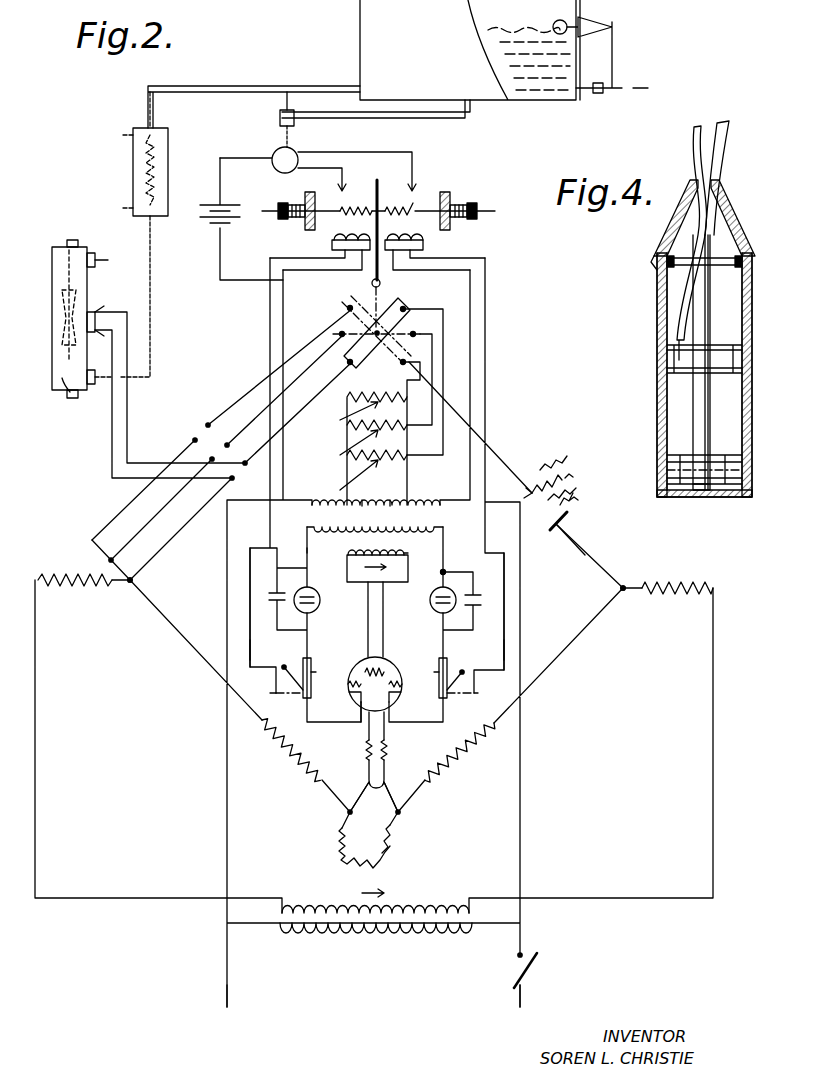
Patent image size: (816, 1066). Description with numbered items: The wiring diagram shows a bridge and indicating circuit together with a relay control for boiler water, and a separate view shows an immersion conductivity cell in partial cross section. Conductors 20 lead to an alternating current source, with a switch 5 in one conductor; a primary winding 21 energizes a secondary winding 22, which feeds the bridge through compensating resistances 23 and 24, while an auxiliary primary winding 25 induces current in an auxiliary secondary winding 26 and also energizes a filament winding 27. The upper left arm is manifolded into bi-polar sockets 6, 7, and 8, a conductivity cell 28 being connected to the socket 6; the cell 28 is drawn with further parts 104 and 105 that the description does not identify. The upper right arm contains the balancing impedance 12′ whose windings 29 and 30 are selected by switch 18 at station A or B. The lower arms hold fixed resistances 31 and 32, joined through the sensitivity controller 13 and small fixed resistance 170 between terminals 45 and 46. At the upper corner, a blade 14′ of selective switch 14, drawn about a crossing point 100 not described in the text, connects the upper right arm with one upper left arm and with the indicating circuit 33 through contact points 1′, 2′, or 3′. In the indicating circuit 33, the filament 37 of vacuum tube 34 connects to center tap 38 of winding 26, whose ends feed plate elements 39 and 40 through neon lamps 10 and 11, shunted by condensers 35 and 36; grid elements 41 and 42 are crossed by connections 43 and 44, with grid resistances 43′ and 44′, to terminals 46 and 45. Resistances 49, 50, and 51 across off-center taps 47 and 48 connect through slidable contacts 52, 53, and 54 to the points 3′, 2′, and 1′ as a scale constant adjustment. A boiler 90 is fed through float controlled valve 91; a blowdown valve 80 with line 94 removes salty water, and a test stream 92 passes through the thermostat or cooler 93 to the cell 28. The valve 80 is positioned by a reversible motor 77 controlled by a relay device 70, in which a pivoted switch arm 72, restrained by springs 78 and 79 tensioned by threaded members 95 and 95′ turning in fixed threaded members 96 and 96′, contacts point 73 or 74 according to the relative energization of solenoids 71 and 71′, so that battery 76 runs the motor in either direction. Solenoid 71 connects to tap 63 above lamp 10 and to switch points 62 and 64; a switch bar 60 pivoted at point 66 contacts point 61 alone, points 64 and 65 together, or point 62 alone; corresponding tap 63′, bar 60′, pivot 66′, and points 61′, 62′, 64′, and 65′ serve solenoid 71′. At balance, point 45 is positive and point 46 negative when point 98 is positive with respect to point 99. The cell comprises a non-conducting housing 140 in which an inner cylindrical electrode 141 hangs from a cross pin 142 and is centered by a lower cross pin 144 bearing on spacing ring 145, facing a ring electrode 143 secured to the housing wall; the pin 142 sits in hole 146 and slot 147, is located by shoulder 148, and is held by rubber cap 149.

In FIG. 2, the boiler 90 is at (360, 37).
In FIG. 2, the float controlled valve 91 is at (598, 94).
In FIG. 2, the test stream 92 is at (292, 85).
In FIG. 2, the blowdown valve 80 is at (278, 100).
In FIG. 2, the line 94 is at (450, 118).
In FIG. 2, the reversible motor 77 is at (272, 157).
In FIG. 2, the contact point 73 is at (352, 182).
In FIG. 2, the contact point 74 is at (400, 182).
In FIG. 2, the pivoted switch arm 72 is at (389, 227).
In FIG. 2, the relay device 70 is at (433, 204).
In FIG. 2, the spring 78 is at (356, 218).
In FIG. 2, the spring 79 is at (405, 218).
In FIG. 2, the fixed threaded member 96 is at (305, 205).
In FIG. 2, the fixed threaded member 96′ is at (452, 205).
In FIG. 2, the threaded member 95 is at (280, 216).
In FIG. 2, the threaded member 95′ is at (490, 212).
In FIG. 2, the solenoid 71 is at (332, 243).
In FIG. 2, the solenoid 71′ is at (423, 243).
In FIG. 2, the battery 76 is at (215, 224).
In FIG. 2, the thermostat or cooler 93 is at (133, 158).
In FIG. 2, the conductivity cell 28 is at (52, 262).
In FIG. 2, the thermostat element 105 is at (62, 330).
In FIG. 2, the thermostat terminal 104 is at (62, 378).
In FIG. 2, the bi-polar socket 8 is at (204, 430).
In FIG. 2, the bi-polar socket 7 is at (220, 458).
In FIG. 2, the bi-polar socket 6 is at (238, 475).
In FIG. 2, the compensating resistance 23 is at (74, 578).
In FIG. 2, the point 98 is at (128, 584).
In FIG. 2, the compensating resistance 24 is at (673, 586).
In FIG. 2, the point 99 is at (624, 592).
In FIG. 2, the selective switch 14 is at (402, 303).
In FIG. 2, the blade 14′ is at (380, 318).
In FIG. 2, the pivot 100 is at (377, 340).
In FIG. 2, the contact point 1′ is at (408, 309).
In FIG. 2, the contact point 2′ is at (416, 334).
In FIG. 2, the contact point 3′ is at (407, 362).
In FIG. 2, the resistance 49 is at (347, 401).
In FIG. 2, the resistance 50 is at (347, 430).
In FIG. 2, the resistance 51 is at (347, 462).
In FIG. 2, the slidable contact 52 is at (345, 415).
In FIG. 2, the slidable contact 53 is at (345, 447).
In FIG. 2, the slidable contact 54 is at (345, 480).
In FIG. 2, the off-center tap 47 is at (362, 502).
In FIG. 2, the off-center tap 48 is at (390, 500).
In FIG. 2, the auxiliary primary winding 25 is at (412, 503).
In FIG. 2, the auxiliary secondary winding 26 is at (443, 528).
In FIG. 2, the indicating circuit 33 is at (420, 480).
In FIG. 2, the center tap 38 is at (350, 554).
In FIG. 2, the tap 63 is at (350, 556).
In FIG. 2, the tap 63′ is at (405, 554).
In FIG. 2, the filament winding 27 is at (440, 572).
In FIG. 2, the neon lamp 10 is at (320, 600).
In FIG. 2, the neon lamp 11 is at (430, 600).
In FIG. 2, the condenser 35 is at (250, 590).
In FIG. 2, the condenser 36 is at (480, 595).
In FIG. 2, the switch point 64 is at (250, 655).
In FIG. 2, the switch point 64′ is at (504, 655).
In FIG. 2, the switch point 61 is at (311, 660).
In FIG. 2, the switch point 61′ is at (441, 660).
In FIG. 2, the switch bar 60 is at (312, 672).
In FIG. 2, the switch bar 60′ is at (439, 672).
In FIG. 2, the switch point 65 is at (282, 664).
In FIG. 2, the switch point 65′ is at (463, 668).
In FIG. 2, the pivot point 66 is at (300, 695).
In FIG. 2, the pivot point 66′ is at (450, 696).
In FIG. 2, the switch point 62 is at (272, 693).
In FIG. 2, the switch point 62′ is at (476, 693).
In FIG. 2, the filament 37 is at (363, 670).
In FIG. 2, the grid element 41 is at (350, 686).
In FIG. 2, the grid element 42 is at (400, 690).
In FIG. 2, the plate element 39 is at (350, 696).
In FIG. 2, the plate element 40 is at (393, 703).
In FIG. 2, the vacuum tube 34 is at (358, 714).
In FIG. 2, the grid resistance 43′ is at (366, 756).
In FIG. 2, the grid resistance 44′ is at (388, 758).
In FIG. 2, the fixed resistance 31 is at (290, 752).
In FIG. 2, the fixed resistance 32 is at (455, 758).
In FIG. 2, the connection 43 is at (348, 807).
In FIG. 2, the connection 44 is at (400, 807).
In FIG. 2, the terminal 45 is at (345, 815).
In FIG. 2, the terminal 46 is at (403, 815).
In FIG. 2, the sensitivity controller 13 is at (338, 868).
In FIG. 2, the small fixed resistance 170 is at (402, 838).
In FIG. 2, the secondary winding 22 is at (435, 902).
In FIG. 2, the primary winding 21 is at (352, 945).
In FIG. 2, the conductor 20 is at (227, 988).
In FIG. 2, the switch 5 is at (538, 962).
In FIG. 2, the balancing impedance 12′ is at (563, 451).
In FIG. 2, the winding 29 is at (575, 478).
In FIG. 2, the winding 30 is at (578, 501).
In FIG. 2, the station A is at (558, 506).
In FIG. 2, the station B is at (570, 520).
In FIG. 2, the selective switch 18 is at (554, 528).
In FIG. 4, the housing 140 is at (657, 350).
In FIG. 4, the cross pin 142 is at (750, 250).
In FIG. 4, the slot 147 is at (750, 262).
In FIG. 4, the inner cylindrical electrode 141 is at (684, 421).
In FIG. 4, the second electrode 143 is at (740, 347).
In FIG. 4, the spacing ring 145 is at (745, 478).
In FIG. 4, the lower cross pin 144 is at (722, 470).
In FIG. 4, the shoulder 148 is at (664, 298).
In FIG. 4, the rubber cap 149 is at (710, 240).
In FIG. 4, the hole 146 is at (657, 282).